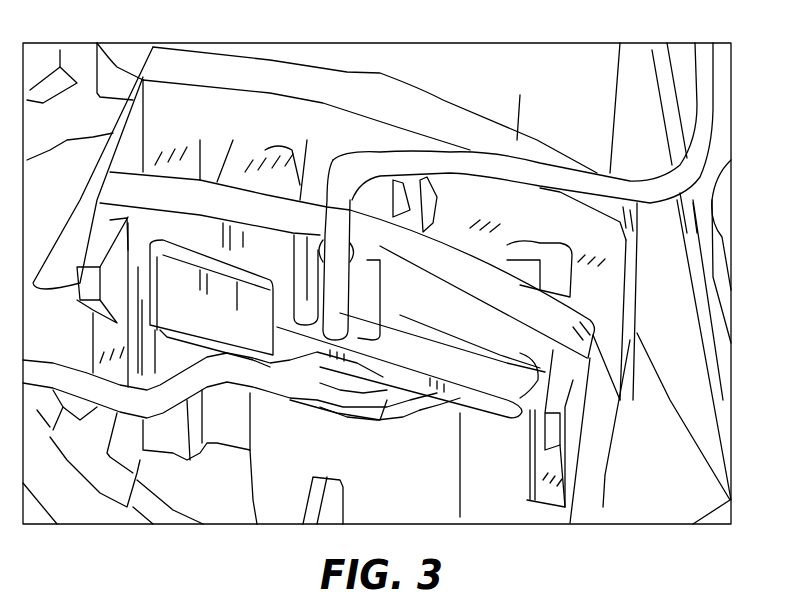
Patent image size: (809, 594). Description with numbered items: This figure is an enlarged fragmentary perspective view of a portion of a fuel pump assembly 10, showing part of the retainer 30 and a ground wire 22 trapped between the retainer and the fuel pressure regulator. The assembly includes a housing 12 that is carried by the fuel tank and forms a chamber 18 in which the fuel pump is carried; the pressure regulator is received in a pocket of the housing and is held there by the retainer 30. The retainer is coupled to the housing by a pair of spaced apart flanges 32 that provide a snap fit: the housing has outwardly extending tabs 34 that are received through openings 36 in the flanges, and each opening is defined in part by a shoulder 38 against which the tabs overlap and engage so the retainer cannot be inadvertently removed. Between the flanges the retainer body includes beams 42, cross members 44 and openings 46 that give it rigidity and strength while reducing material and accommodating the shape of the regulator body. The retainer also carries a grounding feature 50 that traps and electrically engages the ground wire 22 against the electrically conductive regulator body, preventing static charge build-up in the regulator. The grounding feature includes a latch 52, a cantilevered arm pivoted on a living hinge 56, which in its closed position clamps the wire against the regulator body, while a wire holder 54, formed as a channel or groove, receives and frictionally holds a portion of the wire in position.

The fuel pump assembly 10 is at (743, 122).
The housing 12 is at (720, 467).
The chamber 18 is at (273, 487).
The ground wire 22 is at (476, 160).
The retainer 30 is at (490, 405).
The flanges 32 is at (585, 450).
The tabs 34 is at (600, 363).
The openings 36 is at (608, 323).
The shoulder 38 is at (592, 408).
The beams 42 is at (168, 62).
The cross members 44 is at (278, 150).
The openings 46 is at (323, 185).
The grounding feature 50 is at (437, 400).
The latch 52 is at (387, 398).
The wire holder 54 is at (353, 303).
The living hinge 56 is at (533, 385).